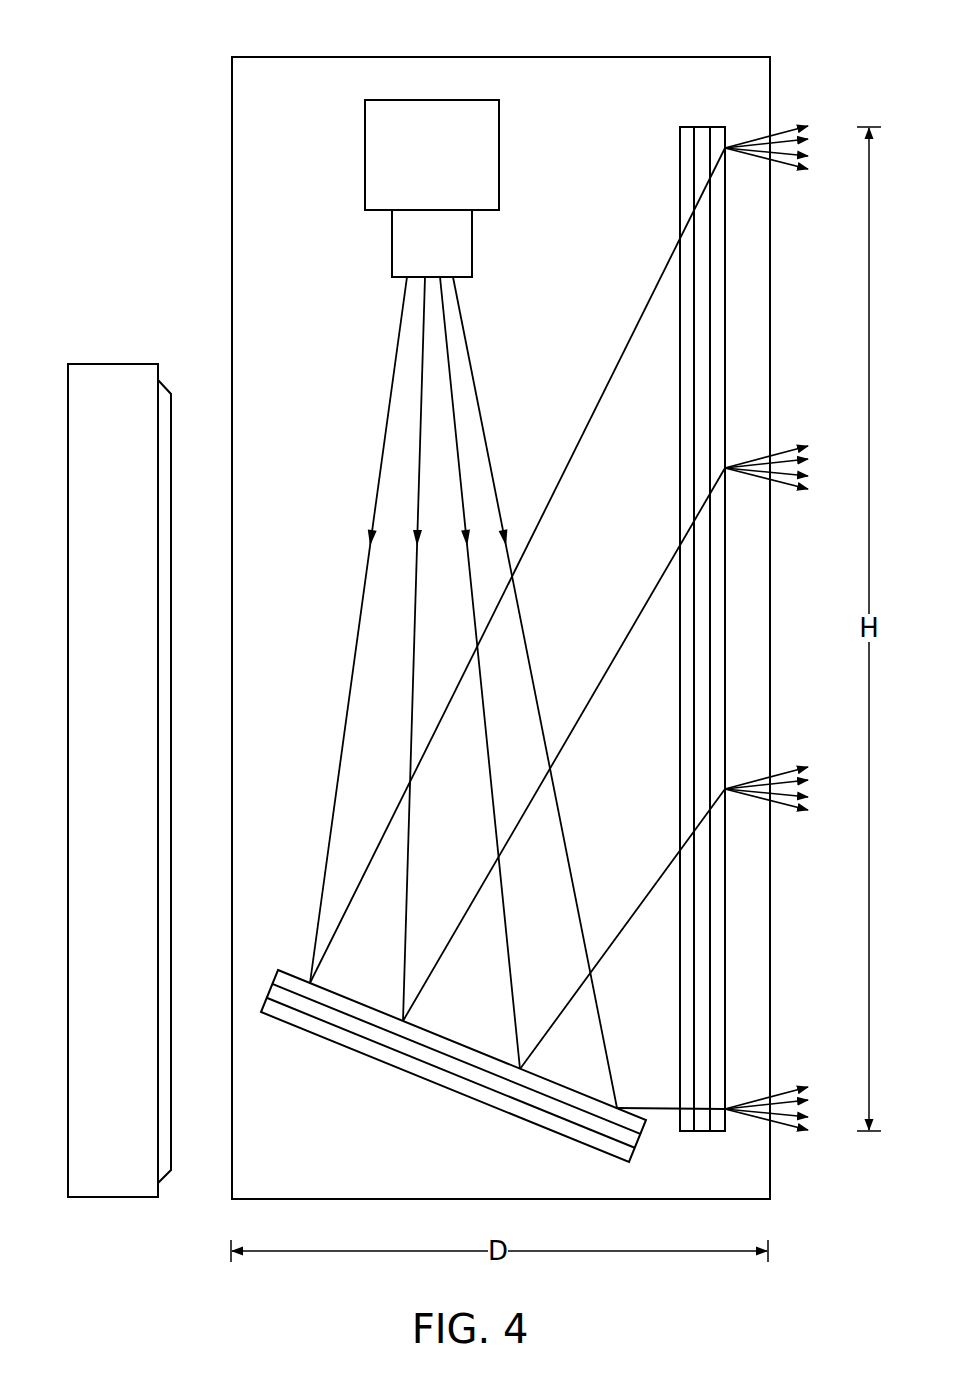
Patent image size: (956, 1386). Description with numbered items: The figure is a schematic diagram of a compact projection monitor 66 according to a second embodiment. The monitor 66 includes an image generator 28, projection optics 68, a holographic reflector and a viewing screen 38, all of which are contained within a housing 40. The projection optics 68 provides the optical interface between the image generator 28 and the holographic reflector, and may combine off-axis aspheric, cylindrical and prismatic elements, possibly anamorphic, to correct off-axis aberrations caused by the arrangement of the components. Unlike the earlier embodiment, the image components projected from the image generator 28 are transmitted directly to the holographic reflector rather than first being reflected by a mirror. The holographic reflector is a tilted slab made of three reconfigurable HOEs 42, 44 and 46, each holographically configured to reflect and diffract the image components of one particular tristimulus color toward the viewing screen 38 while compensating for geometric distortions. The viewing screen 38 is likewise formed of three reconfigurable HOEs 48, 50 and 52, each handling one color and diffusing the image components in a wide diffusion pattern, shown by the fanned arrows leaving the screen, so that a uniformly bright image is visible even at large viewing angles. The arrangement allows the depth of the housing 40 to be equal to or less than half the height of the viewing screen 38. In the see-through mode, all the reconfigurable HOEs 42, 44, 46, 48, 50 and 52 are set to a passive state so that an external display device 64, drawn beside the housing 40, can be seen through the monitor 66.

The image generator 28 is at (497, 158).
The viewing screen 38 is at (660, 191).
The housing 40 is at (320, 57).
The reconfigurable HOE 42 is at (623, 1160).
The reconfigurable HOE 44 is at (636, 1139).
The reconfigurable HOE 46 is at (648, 1122).
The reconfigurable HOE 48 is at (688, 127).
The reconfigurable HOE 50 is at (702, 127).
The reconfigurable HOE 52 is at (716, 127).
The external display device 64 is at (100, 364).
The projection monitor 66 is at (660, 37).
The projection optics 68 is at (470, 264).